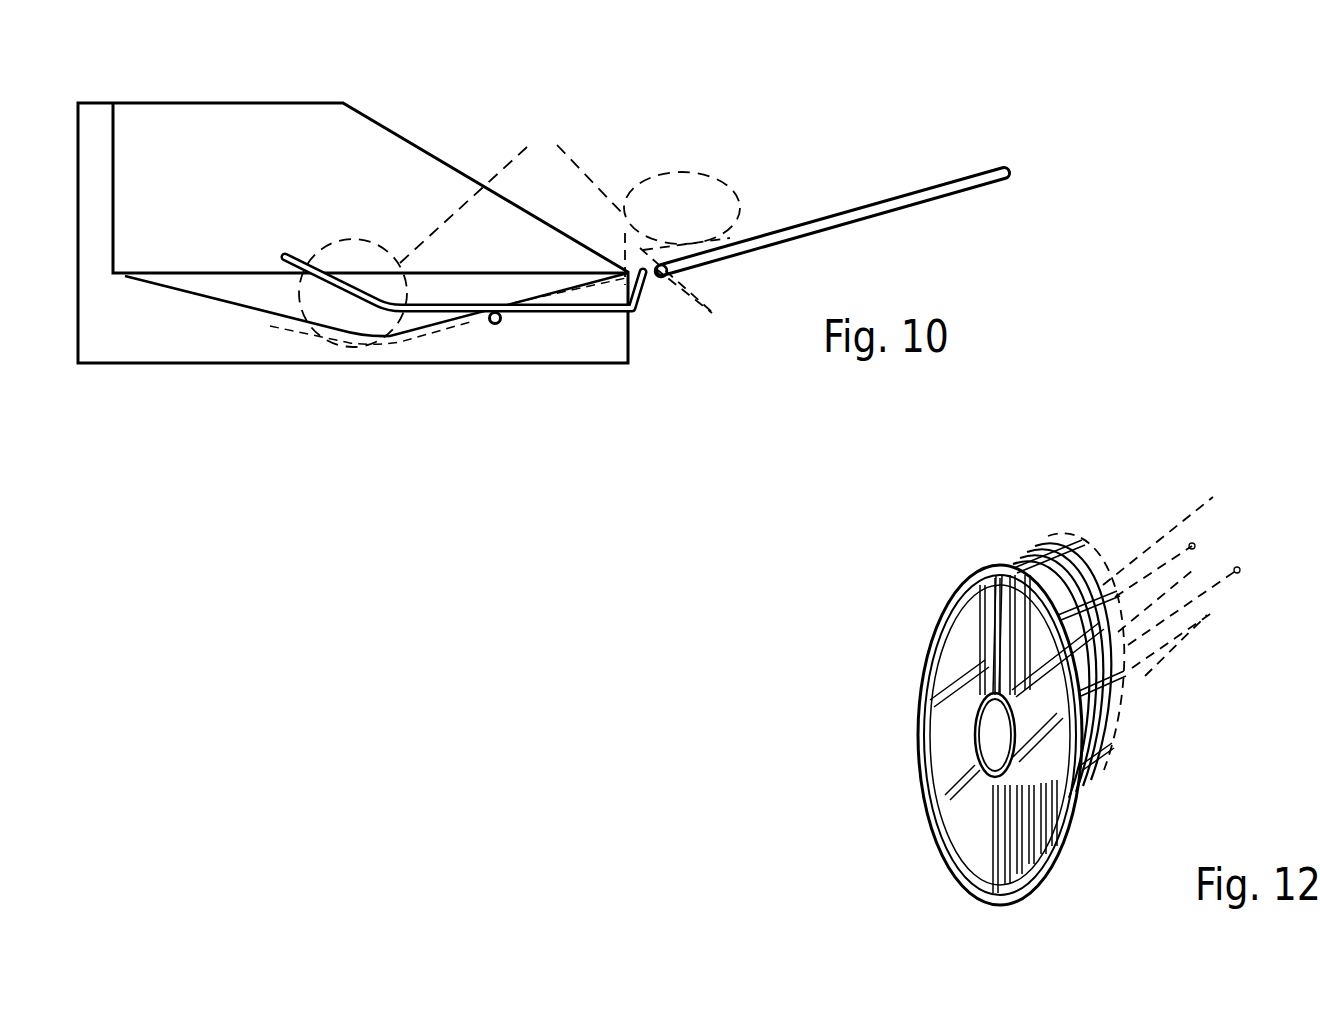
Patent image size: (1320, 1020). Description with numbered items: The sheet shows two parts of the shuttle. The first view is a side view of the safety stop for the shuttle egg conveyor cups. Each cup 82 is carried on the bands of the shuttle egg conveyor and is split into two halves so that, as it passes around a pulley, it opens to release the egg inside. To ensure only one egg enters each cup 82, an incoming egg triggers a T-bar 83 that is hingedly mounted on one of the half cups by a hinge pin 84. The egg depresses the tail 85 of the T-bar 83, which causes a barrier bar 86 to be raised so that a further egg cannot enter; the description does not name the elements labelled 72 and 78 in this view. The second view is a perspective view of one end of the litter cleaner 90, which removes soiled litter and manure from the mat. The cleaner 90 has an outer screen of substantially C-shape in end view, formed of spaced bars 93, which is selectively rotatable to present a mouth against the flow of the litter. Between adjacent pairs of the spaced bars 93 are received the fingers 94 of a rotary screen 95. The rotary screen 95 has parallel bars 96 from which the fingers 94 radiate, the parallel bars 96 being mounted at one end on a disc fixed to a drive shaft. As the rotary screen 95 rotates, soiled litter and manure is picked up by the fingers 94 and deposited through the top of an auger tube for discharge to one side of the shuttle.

In FIG. 10, the camera lens (phantom) 72 is at (519, 234).
In FIG. 10, the rod 78 is at (933, 182).
In FIG. 10, the cup 82 is at (449, 152).
In FIG. 10, the T-bar 83 is at (594, 318).
In FIG. 10, the hinge pin 84 is at (496, 324).
In FIG. 10, the tail 85 is at (335, 292).
In FIG. 10, the barrier bar 86 is at (647, 293).
In FIG. 12, the litter cleaner 90 is at (1051, 634).
In FIG. 12, the spaced bars 93 is at (955, 830).
In FIG. 12, the fingers 94 is at (997, 618).
In FIG. 12, the rotary screen 95 is at (972, 768).
In FIG. 12, the parallel bars 96 is at (1213, 612).